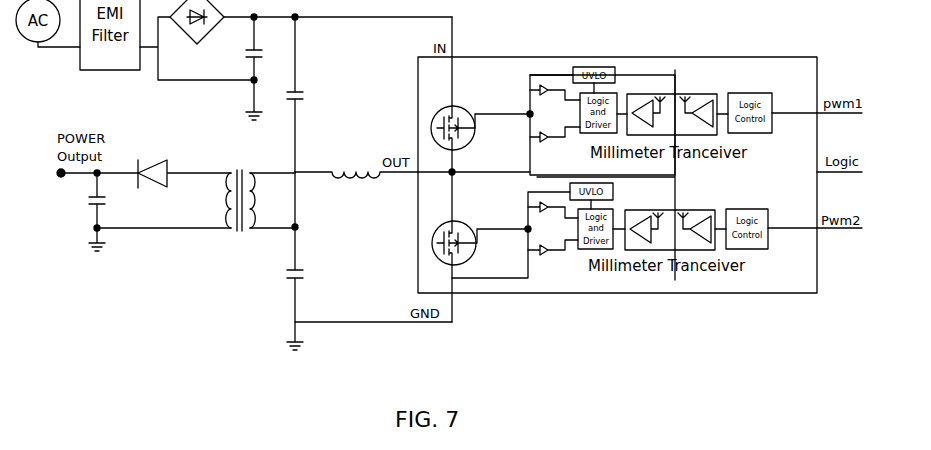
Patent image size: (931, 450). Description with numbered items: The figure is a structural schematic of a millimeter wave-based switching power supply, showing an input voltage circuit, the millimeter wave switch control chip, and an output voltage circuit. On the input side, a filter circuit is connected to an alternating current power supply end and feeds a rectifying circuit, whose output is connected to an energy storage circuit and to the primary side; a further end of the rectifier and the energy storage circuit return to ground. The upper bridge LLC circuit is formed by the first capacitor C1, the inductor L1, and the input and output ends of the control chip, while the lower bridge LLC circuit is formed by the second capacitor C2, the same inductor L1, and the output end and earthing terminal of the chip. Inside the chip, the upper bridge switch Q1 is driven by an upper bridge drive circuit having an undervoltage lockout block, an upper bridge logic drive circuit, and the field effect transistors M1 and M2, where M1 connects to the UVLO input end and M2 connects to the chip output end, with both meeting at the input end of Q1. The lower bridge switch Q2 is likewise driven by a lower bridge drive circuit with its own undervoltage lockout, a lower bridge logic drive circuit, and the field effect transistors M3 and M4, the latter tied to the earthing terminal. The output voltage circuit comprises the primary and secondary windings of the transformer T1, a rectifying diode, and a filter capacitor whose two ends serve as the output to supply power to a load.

The first capacitor C1 is at (305, 94).
The second capacitor C2 is at (306, 261).
The inductor L1 is at (412, 163).
The transformer T1 is at (260, 191).
The upper bridge switch Q1 is at (479, 122).
The lower bridge switch Q2 is at (478, 234).
The field effect transistor M1 is at (541, 92).
The field effect transistor M2 is at (541, 136).
The field effect transistor M3 is at (538, 208).
The field effect transistor M4 is at (538, 251).